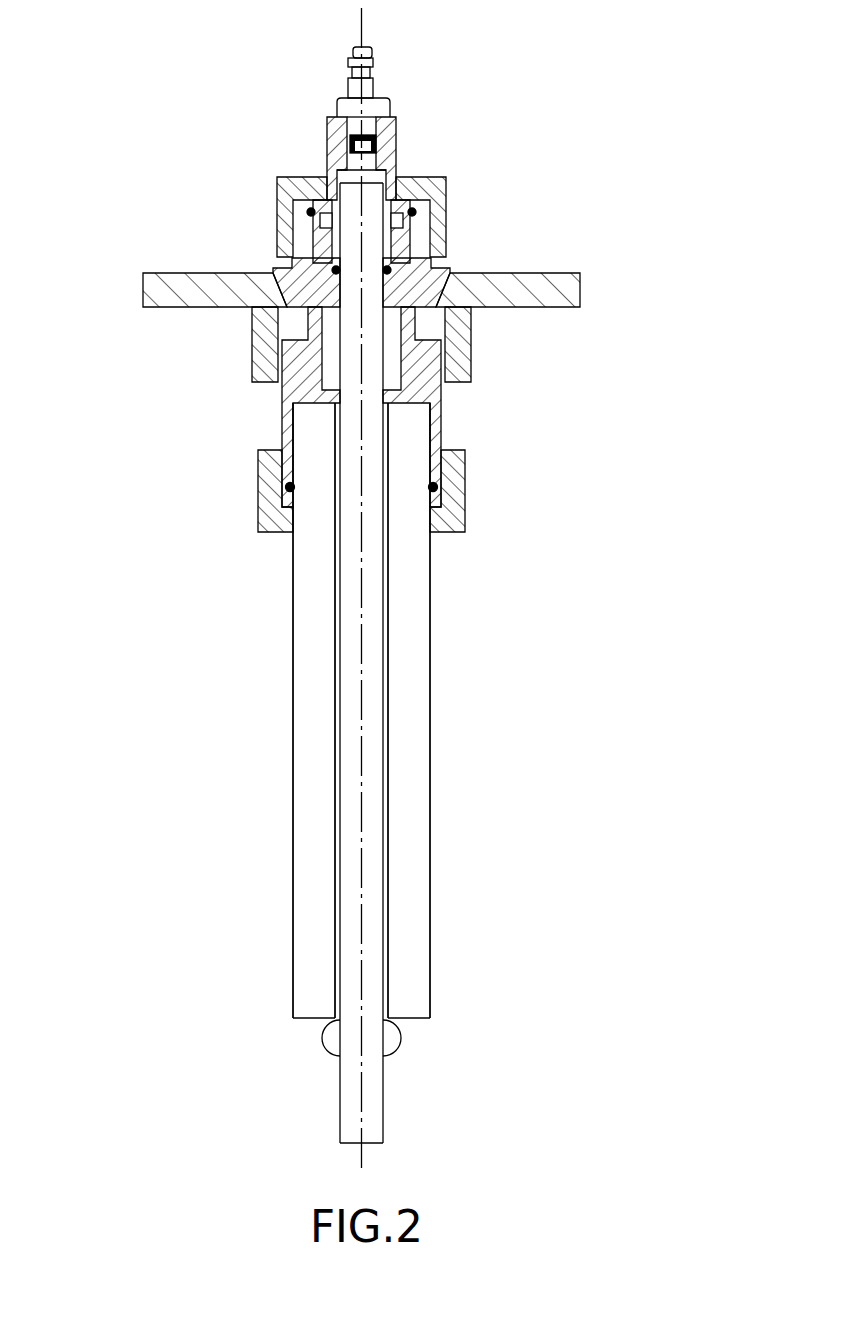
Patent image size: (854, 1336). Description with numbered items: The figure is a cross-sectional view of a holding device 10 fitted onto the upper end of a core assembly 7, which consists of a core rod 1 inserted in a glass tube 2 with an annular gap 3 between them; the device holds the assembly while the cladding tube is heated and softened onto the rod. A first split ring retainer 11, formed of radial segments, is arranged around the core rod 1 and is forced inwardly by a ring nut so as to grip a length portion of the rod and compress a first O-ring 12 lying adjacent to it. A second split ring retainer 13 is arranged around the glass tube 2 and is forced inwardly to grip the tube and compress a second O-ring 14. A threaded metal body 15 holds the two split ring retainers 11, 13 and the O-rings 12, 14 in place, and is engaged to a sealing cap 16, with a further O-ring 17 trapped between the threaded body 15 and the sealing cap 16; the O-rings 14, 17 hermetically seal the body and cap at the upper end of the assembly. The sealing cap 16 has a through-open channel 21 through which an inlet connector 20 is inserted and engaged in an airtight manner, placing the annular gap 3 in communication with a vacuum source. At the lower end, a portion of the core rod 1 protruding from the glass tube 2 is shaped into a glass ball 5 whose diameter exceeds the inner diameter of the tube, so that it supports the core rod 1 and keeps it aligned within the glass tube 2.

The core rod 1 is at (373, 602).
The glass tube 2 is at (405, 699).
The annular gap 3 is at (340, 682).
The glass ball 5 is at (383, 1038).
The core assembly 7 is at (278, 598).
The holding device 10 is at (176, 78).
The first split ring retainer 11 is at (330, 265).
The first O-ring 12 is at (397, 268).
The second split ring retainer 13 is at (463, 528).
The second O-ring 14 is at (437, 483).
The threaded metal body 15 is at (425, 395).
The sealing cap 16 is at (397, 157).
The O-ring 17 is at (420, 205).
The inlet connector 20 is at (387, 107).
The through-open channel 21 is at (327, 165).